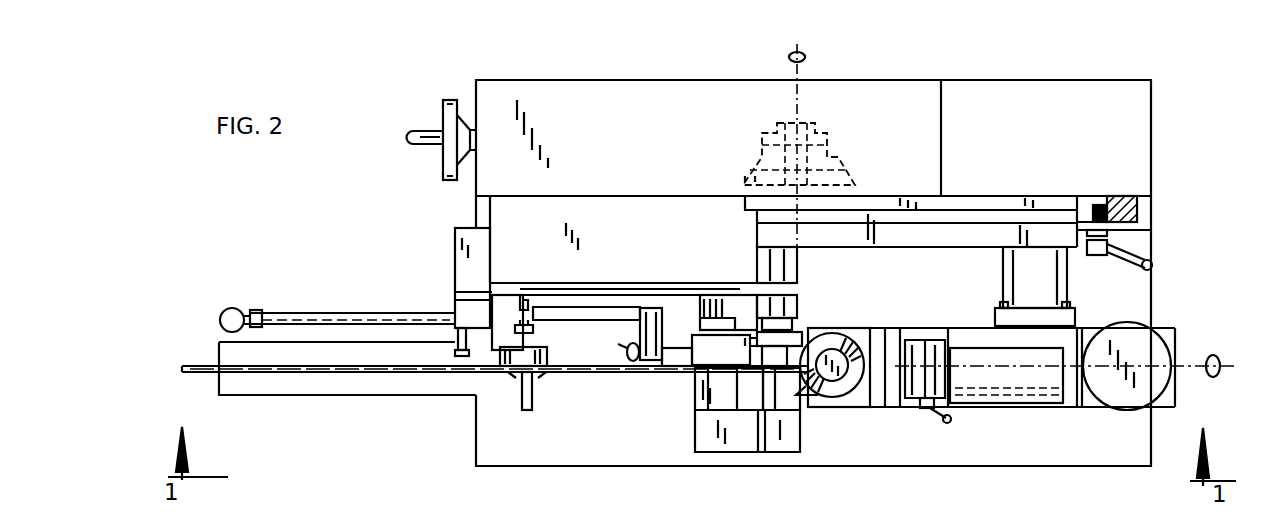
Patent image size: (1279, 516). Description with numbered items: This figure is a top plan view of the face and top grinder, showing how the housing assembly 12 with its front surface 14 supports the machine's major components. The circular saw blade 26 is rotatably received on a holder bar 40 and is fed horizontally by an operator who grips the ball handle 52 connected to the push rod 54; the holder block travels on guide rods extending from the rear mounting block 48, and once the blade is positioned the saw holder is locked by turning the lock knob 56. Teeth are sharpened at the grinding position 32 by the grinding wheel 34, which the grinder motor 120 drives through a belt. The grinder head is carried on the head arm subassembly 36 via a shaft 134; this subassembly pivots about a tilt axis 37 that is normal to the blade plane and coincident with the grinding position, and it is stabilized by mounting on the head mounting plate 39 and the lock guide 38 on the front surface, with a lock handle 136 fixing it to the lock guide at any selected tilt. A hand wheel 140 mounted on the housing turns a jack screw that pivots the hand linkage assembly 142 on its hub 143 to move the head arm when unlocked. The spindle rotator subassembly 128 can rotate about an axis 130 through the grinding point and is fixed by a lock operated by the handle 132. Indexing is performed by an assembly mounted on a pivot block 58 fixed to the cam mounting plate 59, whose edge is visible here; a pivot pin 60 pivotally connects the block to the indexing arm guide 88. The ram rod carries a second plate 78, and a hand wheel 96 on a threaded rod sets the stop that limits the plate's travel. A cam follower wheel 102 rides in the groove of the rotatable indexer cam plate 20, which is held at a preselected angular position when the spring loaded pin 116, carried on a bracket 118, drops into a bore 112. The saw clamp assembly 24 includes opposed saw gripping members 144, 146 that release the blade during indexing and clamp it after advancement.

The housing assembly 12 is at (1002, 88).
The front surface 14 is at (580, 204).
The rotatable indexer cam plate 20 is at (681, 281).
The saw clamp assembly 24 is at (793, 468).
The circular saw blade 26 is at (340, 373).
The grinding position 32 is at (818, 393).
The grinding wheel 34 is at (820, 335).
The head arm subassembly 36 is at (998, 225).
The tilt axis 37 is at (806, 58).
The lock guide 38 is at (1100, 200).
The head mounting plate 39 is at (1120, 200).
The holder bar 40 is at (535, 400).
The rear mounting block 48 is at (455, 248).
The ball handle 52 is at (231, 306).
The push rod 54 is at (296, 310).
The lock knob 56 is at (462, 358).
The pivot block 58 is at (750, 280).
The cam mounting plate 59 is at (457, 292).
The pivot pin 60 is at (708, 282).
The second plate 78 is at (650, 362).
The indexing arm guide 88 is at (740, 361).
The hand wheel 96 is at (630, 362).
The cam follower wheel 102 is at (645, 275).
The bore 112 is at (523, 278).
The spring loaded pin 116 is at (535, 331).
The bracket 118 is at (505, 290).
The grinder motor 120 is at (1128, 330).
The spindle rotator subassembly 128 is at (1010, 402).
The axis 130 is at (1213, 352).
The handle 132 is at (930, 412).
The shaft 134 is at (1003, 288).
The lock handle 136 is at (1122, 252).
The hand wheel 140 is at (446, 112).
The hand linkage assembly 142 is at (830, 147).
The hub 143 is at (745, 157).
The saw gripping member 144 is at (793, 330).
The saw gripping member 146 is at (790, 418).